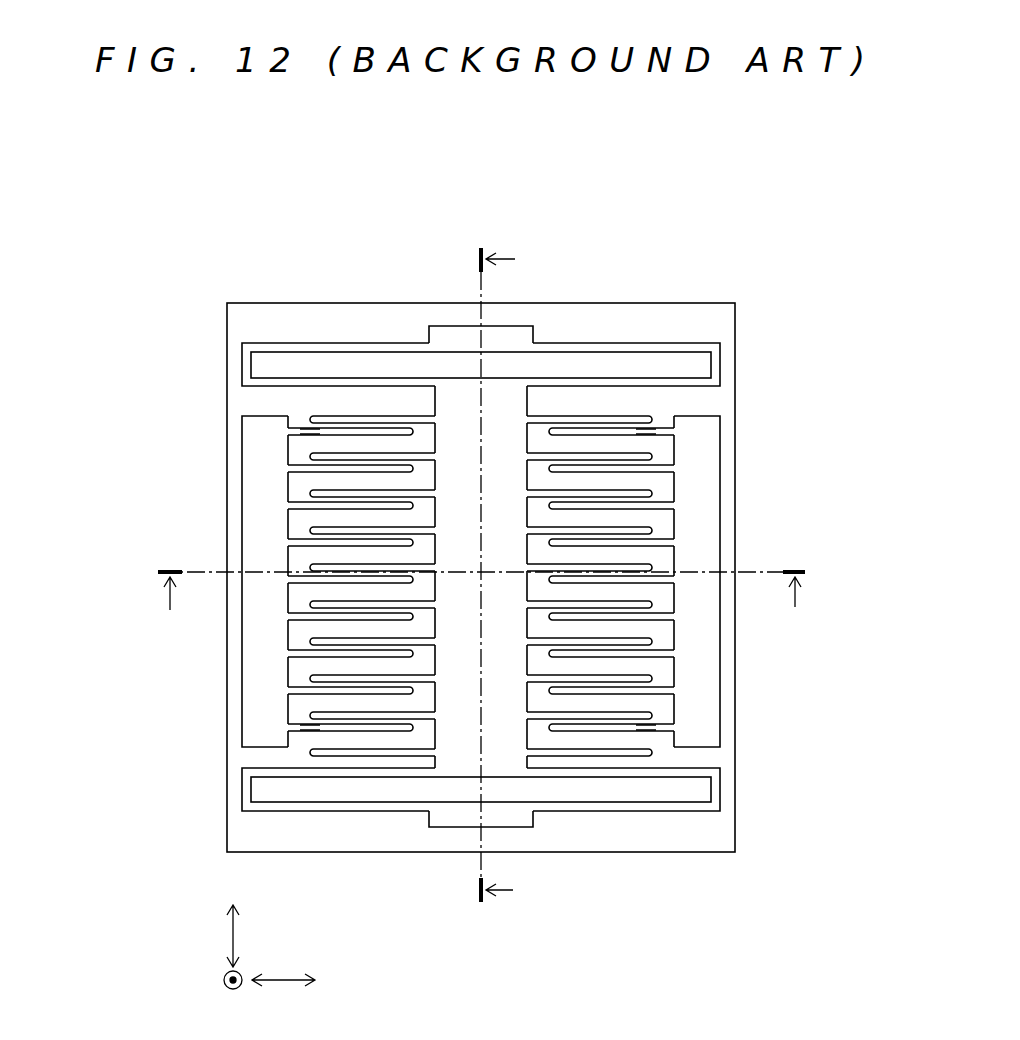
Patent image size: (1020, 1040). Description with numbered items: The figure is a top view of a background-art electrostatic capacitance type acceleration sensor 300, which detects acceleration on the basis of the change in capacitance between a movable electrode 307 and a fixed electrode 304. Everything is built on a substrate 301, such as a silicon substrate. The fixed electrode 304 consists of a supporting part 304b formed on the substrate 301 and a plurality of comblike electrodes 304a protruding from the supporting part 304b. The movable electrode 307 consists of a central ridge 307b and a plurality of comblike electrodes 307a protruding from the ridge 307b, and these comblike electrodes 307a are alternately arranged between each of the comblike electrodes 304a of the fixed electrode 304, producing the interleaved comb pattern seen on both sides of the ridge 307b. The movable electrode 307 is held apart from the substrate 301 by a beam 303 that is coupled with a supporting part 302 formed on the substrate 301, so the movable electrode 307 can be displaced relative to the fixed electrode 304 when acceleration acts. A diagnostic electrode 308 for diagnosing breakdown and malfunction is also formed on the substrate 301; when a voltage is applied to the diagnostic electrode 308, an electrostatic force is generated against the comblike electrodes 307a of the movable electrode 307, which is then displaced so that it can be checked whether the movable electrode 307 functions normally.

The electrostatic capacitance type acceleration sensor 300 is at (512, 207).
The substrate 301 is at (358, 317).
The supporting part 302 is at (527, 334).
The beam 303 is at (695, 383).
The fixed electrode 304 is at (140, 478).
The comblike electrodes 304a is at (300, 504).
The supporting part 304b is at (260, 545).
The movable electrode 307 is at (822, 450).
The comblike electrodes 307a is at (642, 457).
The ridge 307b is at (507, 520).
The diagnostic electrode 308 is at (310, 432).